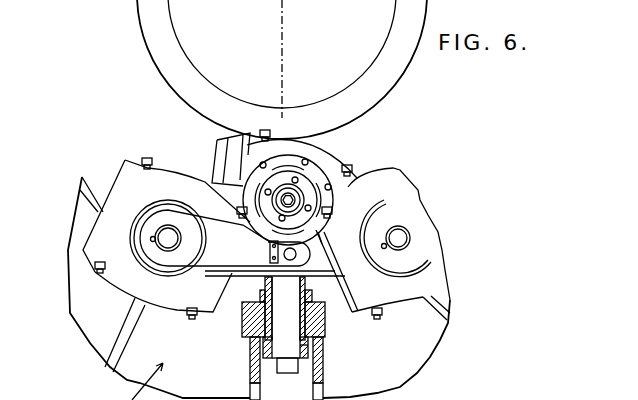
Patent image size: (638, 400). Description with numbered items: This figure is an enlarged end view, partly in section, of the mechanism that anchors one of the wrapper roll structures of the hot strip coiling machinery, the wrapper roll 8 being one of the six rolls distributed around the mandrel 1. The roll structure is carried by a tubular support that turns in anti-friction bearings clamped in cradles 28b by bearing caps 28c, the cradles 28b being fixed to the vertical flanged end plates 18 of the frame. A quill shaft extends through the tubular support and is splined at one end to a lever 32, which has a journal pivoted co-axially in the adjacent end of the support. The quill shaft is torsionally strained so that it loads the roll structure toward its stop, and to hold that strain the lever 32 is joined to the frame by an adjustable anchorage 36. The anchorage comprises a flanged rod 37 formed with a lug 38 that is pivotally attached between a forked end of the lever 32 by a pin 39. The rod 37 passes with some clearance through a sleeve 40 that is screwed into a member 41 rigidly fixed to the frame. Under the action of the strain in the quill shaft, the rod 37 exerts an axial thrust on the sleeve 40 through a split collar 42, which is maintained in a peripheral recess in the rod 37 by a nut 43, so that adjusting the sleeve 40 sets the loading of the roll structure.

The wheel 1 is at (362, 62).
The wrapper roll 8 is at (338, 157).
The end plate 18 is at (103, 322).
The cradle 28b is at (100, 237).
The bearing cap 28c is at (128, 185).
The lever 32 is at (210, 218).
The adjustable anchorage 36 is at (263, 337).
The flanged rod 37 is at (283, 313).
The lug 38 is at (323, 263).
The pin 39 is at (262, 253).
The sleeve 40 is at (325, 320).
The member 41 is at (305, 351).
The split collar 42 is at (276, 350).
The nut 43 is at (312, 357).